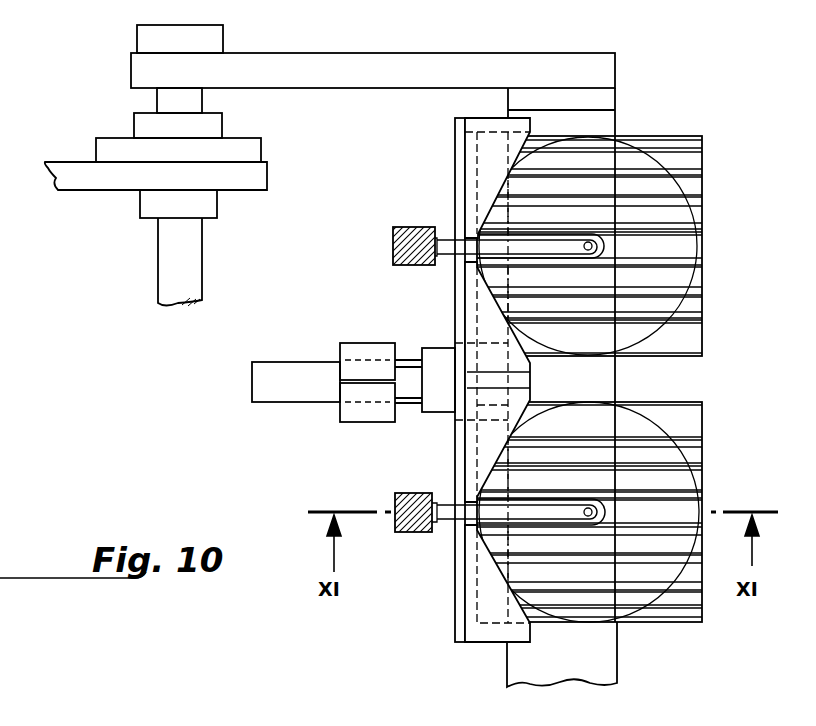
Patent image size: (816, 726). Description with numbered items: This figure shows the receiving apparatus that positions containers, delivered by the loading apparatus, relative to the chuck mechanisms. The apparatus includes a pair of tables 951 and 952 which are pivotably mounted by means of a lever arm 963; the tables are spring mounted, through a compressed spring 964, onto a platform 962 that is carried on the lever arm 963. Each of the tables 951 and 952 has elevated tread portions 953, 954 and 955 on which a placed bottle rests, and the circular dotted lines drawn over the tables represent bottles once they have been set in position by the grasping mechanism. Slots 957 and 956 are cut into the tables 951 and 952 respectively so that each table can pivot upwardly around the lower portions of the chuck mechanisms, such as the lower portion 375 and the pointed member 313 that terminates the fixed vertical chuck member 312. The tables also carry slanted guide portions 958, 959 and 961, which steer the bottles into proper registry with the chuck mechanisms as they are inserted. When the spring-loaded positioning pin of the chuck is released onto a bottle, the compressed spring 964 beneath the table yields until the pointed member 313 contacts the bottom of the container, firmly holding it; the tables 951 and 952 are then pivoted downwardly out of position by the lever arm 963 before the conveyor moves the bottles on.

The lever arm 963 is at (335, 67).
The compressed spring 964 is at (165, 265).
The platform 962 is at (603, 127).
The table 951 is at (623, 244).
The table 952 is at (628, 512).
The elevated tread portion 953 is at (695, 228).
The elevated tread portion 954 is at (695, 264).
The elevated tread portion 955 is at (695, 497).
The slot 957 is at (600, 248).
The slanted guide portion 958 is at (487, 177).
The slanted guide portion 959 is at (487, 322).
The slanted guide portion 961 is at (490, 595).
The lower portion of chuck mechanism 375 is at (448, 510).
The fixed vertical chuck member 312 is at (413, 520).
The pointed member 313 is at (592, 507).
The slot 956 is at (602, 510).